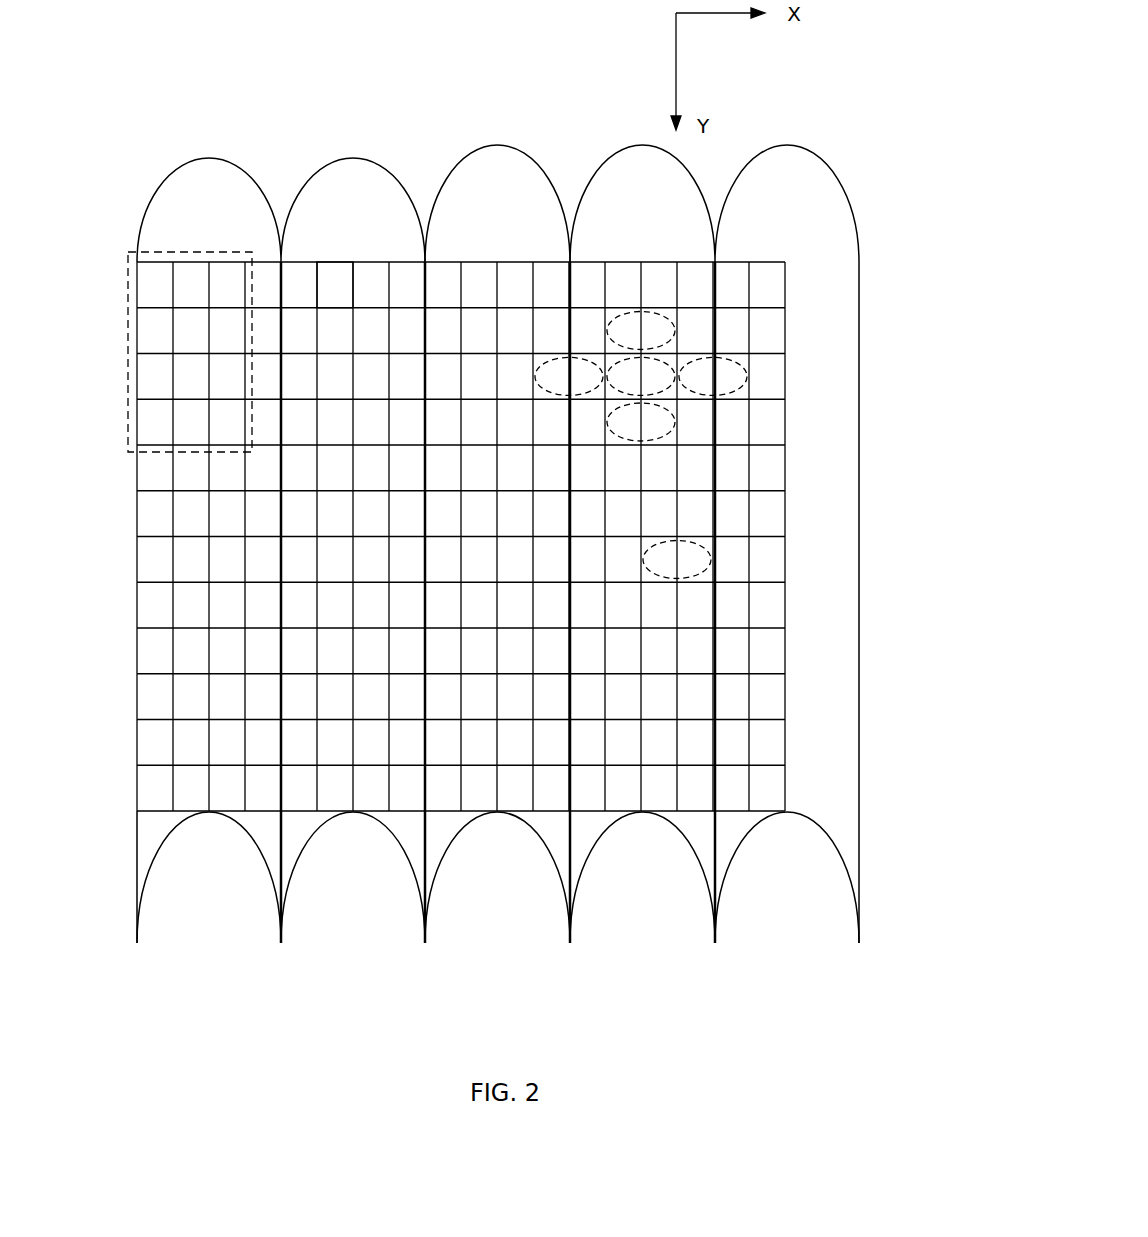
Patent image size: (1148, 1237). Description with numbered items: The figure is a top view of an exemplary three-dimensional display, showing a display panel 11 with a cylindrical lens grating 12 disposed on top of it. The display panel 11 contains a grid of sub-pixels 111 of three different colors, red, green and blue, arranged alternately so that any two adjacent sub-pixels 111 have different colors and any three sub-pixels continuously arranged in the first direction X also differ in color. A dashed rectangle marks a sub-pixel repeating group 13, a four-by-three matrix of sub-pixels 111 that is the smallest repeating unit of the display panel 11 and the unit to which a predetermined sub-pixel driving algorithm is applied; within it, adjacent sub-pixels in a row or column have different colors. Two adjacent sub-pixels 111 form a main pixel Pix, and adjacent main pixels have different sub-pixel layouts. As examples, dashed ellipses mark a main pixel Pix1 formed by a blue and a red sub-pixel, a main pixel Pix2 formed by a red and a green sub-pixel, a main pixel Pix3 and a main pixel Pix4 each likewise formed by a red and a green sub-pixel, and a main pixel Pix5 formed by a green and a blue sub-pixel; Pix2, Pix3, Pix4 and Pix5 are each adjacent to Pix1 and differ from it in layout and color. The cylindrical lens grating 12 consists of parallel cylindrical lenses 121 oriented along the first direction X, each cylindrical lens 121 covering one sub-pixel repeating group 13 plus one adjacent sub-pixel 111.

The display panel 11 is at (373, 246).
The sub-pixel 111 is at (337, 260).
The cylindrical lens grating 12 is at (857, 950).
The cylindrical lens 121 is at (487, 200).
The sub-pixel repeating group 13 is at (211, 234).
The main pixel Pix is at (711, 578).
The main pixel Pix1 is at (676, 350).
The main pixel Pix2 is at (629, 293).
The main pixel Pix3 is at (575, 338).
The main pixel Pix4 is at (674, 440).
The main pixel Pix5 is at (752, 395).